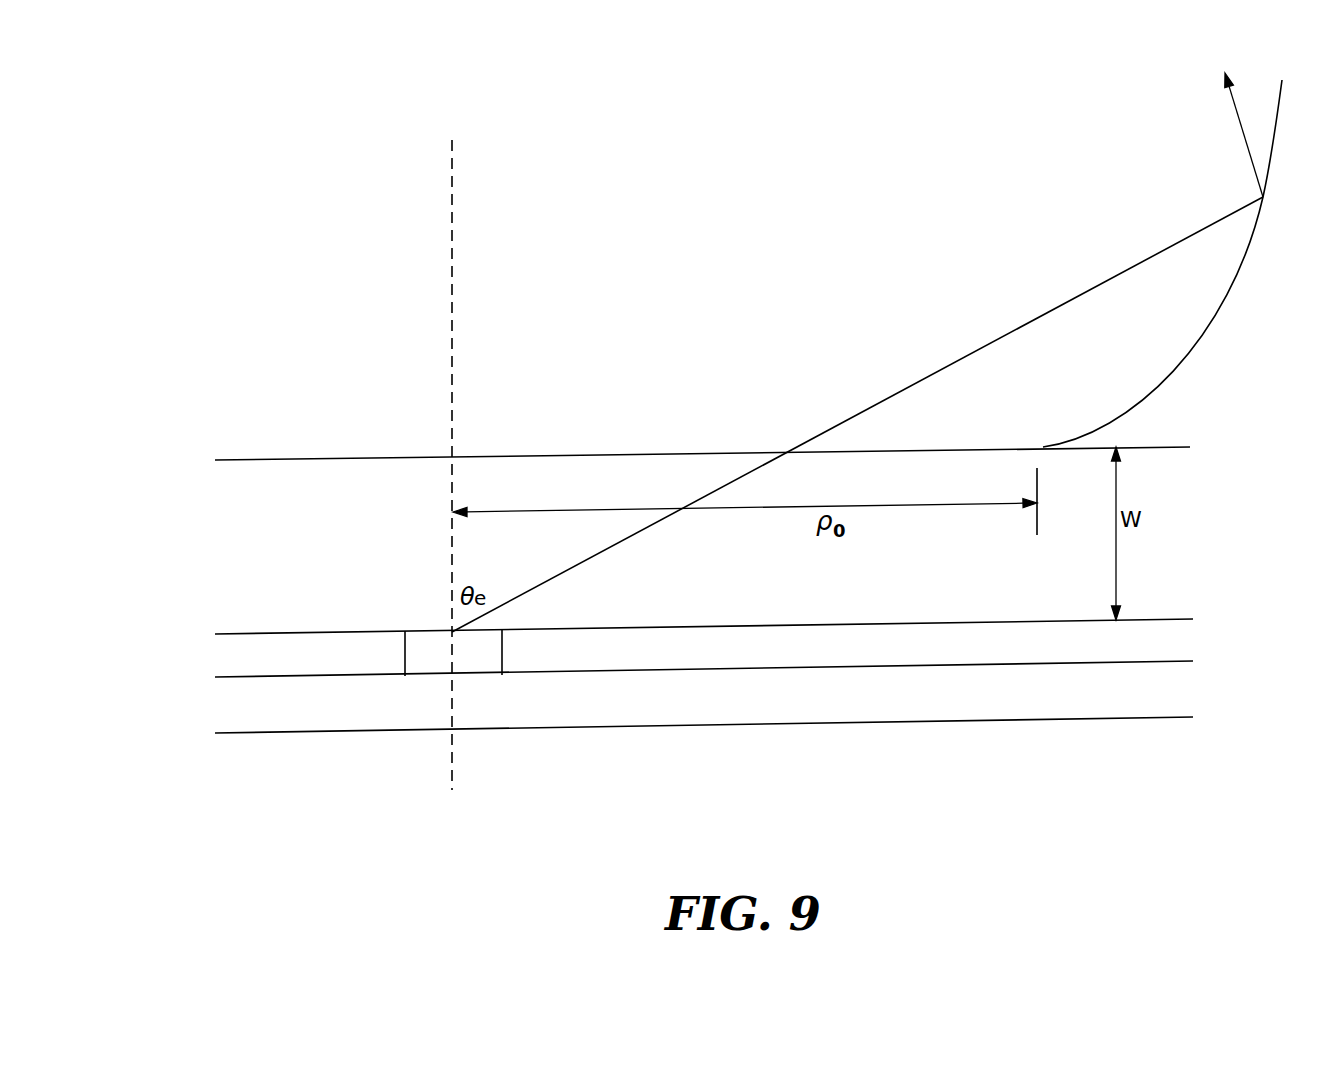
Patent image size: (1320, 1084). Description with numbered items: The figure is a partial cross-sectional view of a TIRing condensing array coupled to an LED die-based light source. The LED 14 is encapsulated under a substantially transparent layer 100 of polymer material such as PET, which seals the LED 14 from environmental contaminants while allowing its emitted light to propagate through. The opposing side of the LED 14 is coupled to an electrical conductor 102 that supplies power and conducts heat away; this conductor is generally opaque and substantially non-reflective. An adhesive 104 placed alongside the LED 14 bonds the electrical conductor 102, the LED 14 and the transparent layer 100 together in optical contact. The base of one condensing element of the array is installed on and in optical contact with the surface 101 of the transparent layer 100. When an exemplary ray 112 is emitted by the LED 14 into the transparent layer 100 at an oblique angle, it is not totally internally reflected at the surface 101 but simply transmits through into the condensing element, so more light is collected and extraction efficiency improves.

The ray 112 is at (958, 341).
The surface 101 is at (273, 444).
The transparent layer 100 is at (655, 544).
The adhesive 104 is at (228, 656).
The electrical conductor 102 is at (229, 706).
The LED 14 is at (425, 672).